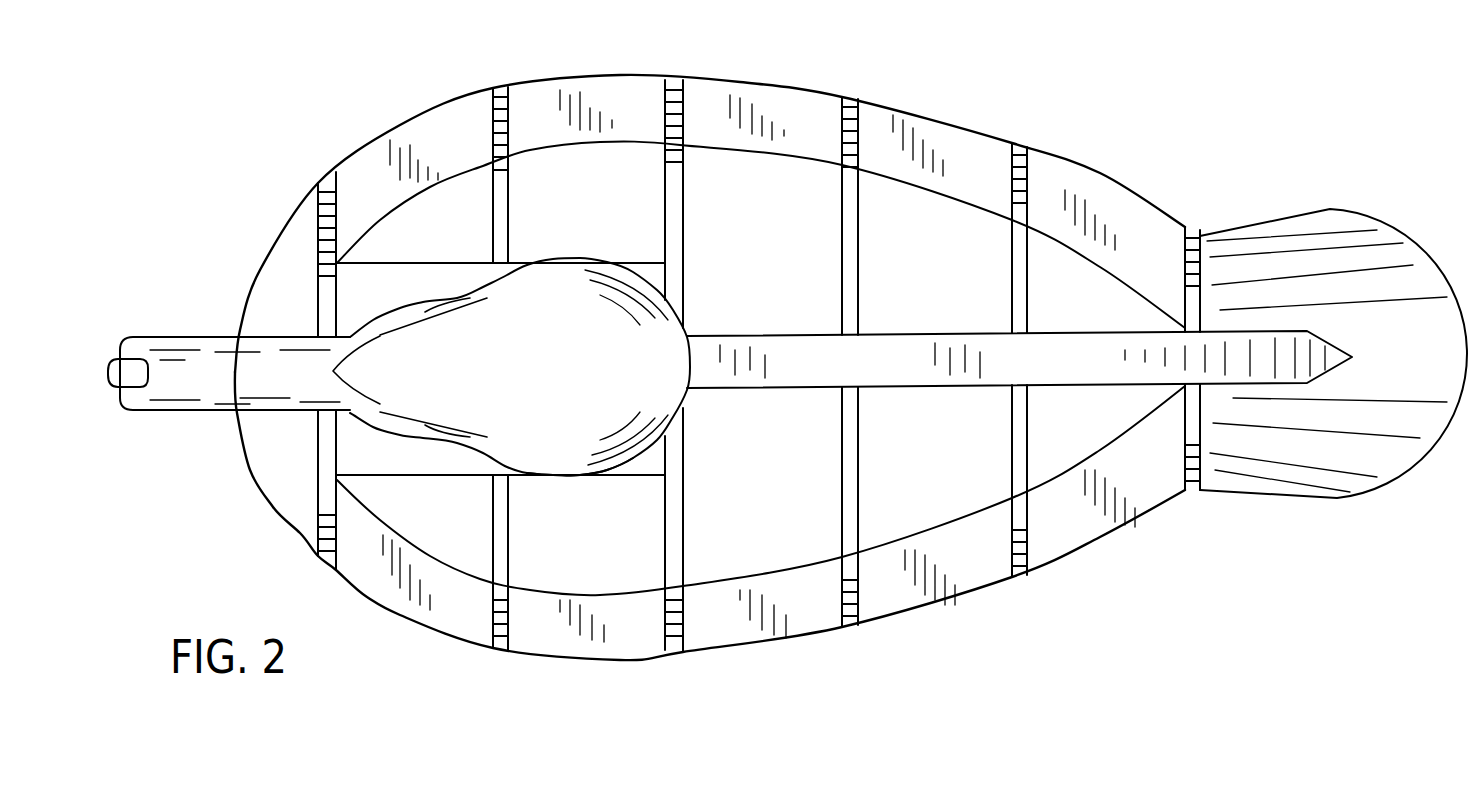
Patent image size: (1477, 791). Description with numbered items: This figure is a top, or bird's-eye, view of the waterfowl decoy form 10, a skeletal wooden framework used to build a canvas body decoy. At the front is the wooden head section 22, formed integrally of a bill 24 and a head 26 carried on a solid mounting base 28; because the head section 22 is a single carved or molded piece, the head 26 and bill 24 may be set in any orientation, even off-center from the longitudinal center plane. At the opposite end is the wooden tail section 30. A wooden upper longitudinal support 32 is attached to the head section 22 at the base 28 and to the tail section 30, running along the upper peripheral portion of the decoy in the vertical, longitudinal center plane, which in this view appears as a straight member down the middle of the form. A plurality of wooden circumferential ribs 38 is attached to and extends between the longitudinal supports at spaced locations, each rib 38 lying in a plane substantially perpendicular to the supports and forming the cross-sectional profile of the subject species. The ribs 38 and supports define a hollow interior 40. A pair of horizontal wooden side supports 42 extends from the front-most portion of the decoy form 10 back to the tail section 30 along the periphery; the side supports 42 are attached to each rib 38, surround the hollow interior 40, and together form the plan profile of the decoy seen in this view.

The waterfowl decoy form 10 is at (1116, 90).
The head section 22 is at (557, 256).
The bill 24 is at (167, 390).
The head 26 is at (548, 457).
The mounting base 28 is at (385, 280).
The tail section 30 is at (1380, 228).
The upper longitudinal support 32 is at (973, 343).
The circumferential rib 38 is at (510, 103).
The hollow interior 40 is at (728, 234).
The horizontal side support 42 is at (908, 135).